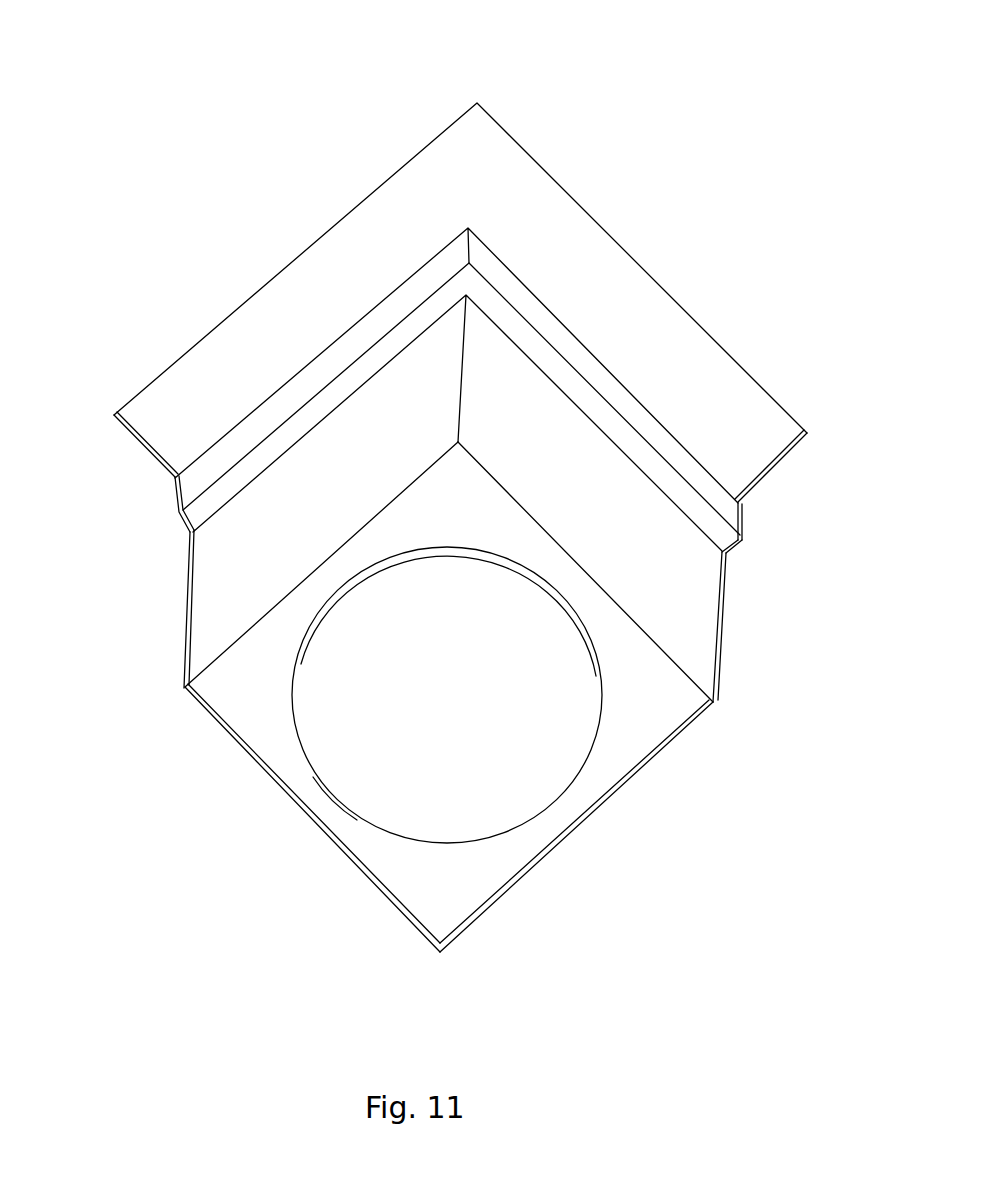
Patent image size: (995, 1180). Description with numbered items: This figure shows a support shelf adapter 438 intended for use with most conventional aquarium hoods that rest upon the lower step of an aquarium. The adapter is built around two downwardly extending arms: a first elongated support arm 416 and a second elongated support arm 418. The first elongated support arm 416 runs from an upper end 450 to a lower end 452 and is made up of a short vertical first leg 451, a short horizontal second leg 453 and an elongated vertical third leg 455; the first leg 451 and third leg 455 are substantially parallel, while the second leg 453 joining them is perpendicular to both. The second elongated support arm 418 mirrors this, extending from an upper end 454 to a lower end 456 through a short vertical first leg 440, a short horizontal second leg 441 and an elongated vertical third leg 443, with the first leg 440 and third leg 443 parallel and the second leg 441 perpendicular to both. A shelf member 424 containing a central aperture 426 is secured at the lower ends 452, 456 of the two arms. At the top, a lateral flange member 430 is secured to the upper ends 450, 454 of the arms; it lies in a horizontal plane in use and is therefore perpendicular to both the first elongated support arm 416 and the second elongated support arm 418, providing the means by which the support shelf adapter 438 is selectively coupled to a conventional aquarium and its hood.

The support shelf adapter 438 is at (330, 162).
The lateral flange member 430 is at (570, 237).
The first elongated support arm 416 is at (305, 450).
The second elongated support arm 418 is at (643, 505).
The first leg 451 is at (195, 477).
The second leg 453 is at (195, 512).
The third leg 455 is at (193, 600).
The first leg 440 is at (740, 520).
The second leg 441 is at (727, 553).
The third leg 443 is at (717, 633).
The upper end 450 is at (243, 420).
The lower end 452 is at (268, 615).
The shelf member 424 is at (423, 890).
The central aperture 426 is at (468, 842).
The upper end 454 is at (582, 352).
The lower end 456 is at (667, 660).